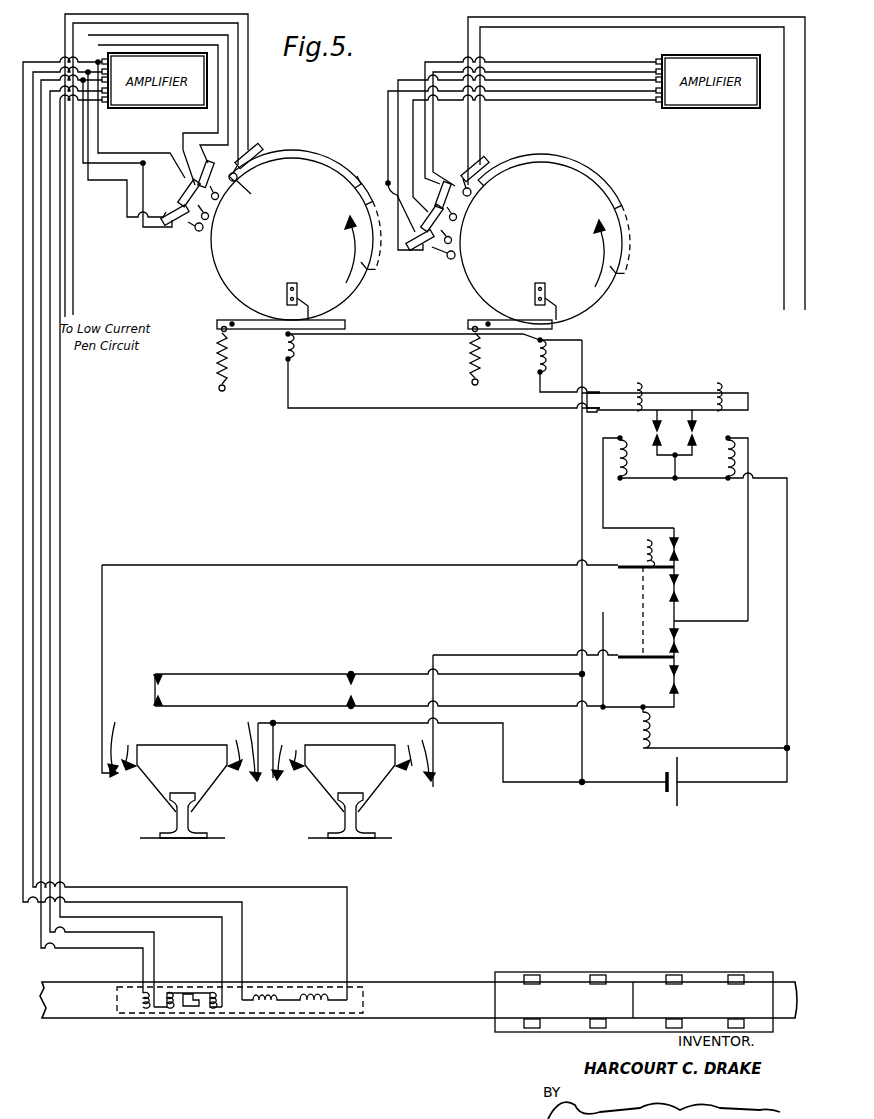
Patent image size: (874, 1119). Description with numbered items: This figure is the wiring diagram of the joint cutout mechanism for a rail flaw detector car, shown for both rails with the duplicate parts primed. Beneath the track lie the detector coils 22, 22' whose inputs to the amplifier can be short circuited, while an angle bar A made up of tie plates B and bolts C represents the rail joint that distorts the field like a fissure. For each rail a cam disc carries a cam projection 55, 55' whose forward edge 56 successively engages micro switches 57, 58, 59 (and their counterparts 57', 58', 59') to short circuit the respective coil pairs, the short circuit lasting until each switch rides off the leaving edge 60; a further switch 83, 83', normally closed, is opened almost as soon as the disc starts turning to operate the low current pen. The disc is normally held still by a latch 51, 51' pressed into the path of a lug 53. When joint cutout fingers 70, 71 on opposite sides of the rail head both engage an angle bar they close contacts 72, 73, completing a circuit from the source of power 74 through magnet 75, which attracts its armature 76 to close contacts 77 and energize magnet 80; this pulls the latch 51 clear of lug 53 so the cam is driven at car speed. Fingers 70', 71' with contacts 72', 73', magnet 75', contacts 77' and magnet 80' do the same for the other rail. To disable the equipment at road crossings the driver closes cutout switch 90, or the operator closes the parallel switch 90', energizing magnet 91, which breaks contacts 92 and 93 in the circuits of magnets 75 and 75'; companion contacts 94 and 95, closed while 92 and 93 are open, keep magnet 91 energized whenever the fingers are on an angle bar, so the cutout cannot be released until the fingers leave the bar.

The cam projection 55 is at (296, 223).
The cam projection 55' is at (545, 226).
The forward (leading) edge 56 is at (262, 150).
The micro switch 57 is at (229, 190).
The micro switch 57' is at (468, 205).
The micro switch 58 is at (193, 224).
The micro switch 58' is at (461, 230).
The micro switch 59 is at (180, 229).
The micro switch 59' is at (430, 259).
The leaving edge 60 is at (359, 177).
The switch 83 is at (247, 188).
The switch 83' is at (487, 179).
The lug 53 is at (299, 294).
The latch 51 is at (281, 355).
The latch 51' is at (512, 334).
The magnet 80 is at (443, 370).
The magnet 80' is at (549, 365).
The armature 76 is at (621, 413).
The contacts 77 is at (672, 421).
The contacts 77' is at (711, 432).
The magnet 75 is at (695, 592).
The magnet 75' is at (757, 528).
The contacts 92 is at (684, 549).
The contacts 94 is at (680, 596).
The contacts 93 is at (684, 642).
The contacts 95 is at (680, 690).
The magnet 91 is at (653, 730).
The source of power 74 is at (669, 793).
The driver's cutout switch 90 is at (356, 687).
The switch 90' is at (373, 690).
The joint cutout finger 70 is at (189, 791).
The joint cutout finger 70' is at (364, 791).
The joint cutout finger 71 is at (147, 788).
The joint cutout finger 71' is at (321, 790).
The contacts 72 is at (239, 748).
The contacts 72' is at (415, 756).
The contacts 73 is at (122, 741).
The contacts 73' is at (290, 755).
The pair of coils 22 is at (294, 1026).
The pair of coils 22' is at (188, 1029).
The angle bar A is at (496, 1036).
The tie plates B is at (570, 972).
The bolts C is at (676, 972).
The car wheel c is at (586, 1031).